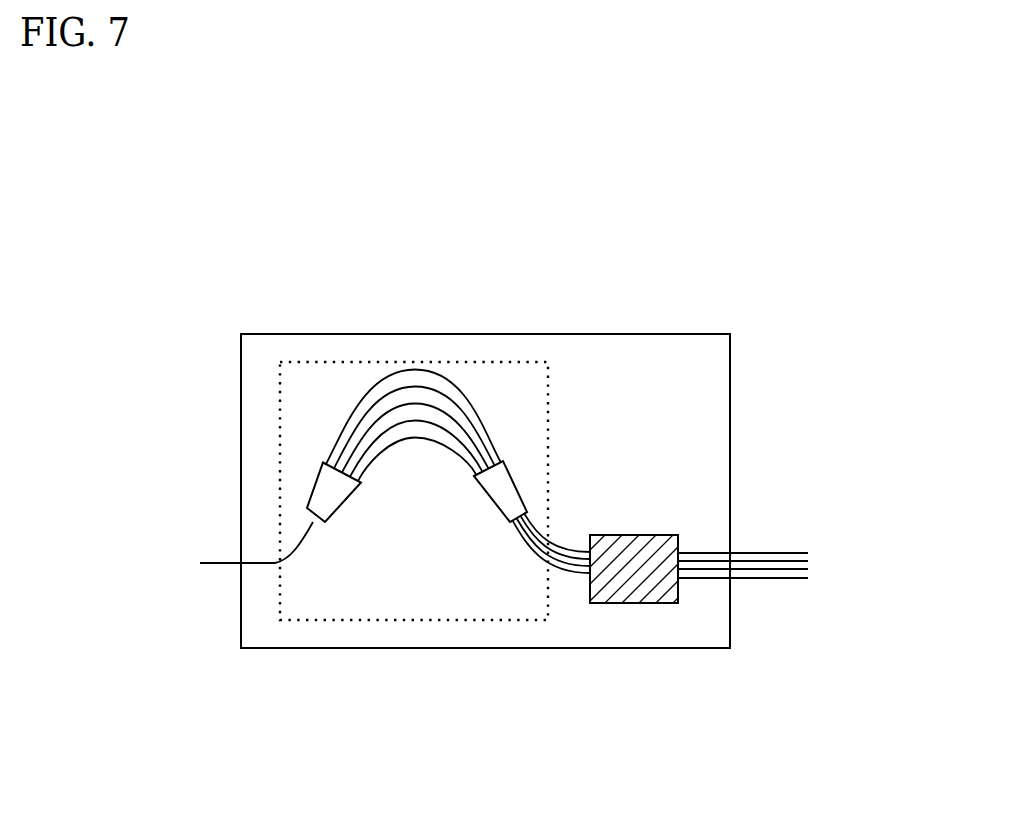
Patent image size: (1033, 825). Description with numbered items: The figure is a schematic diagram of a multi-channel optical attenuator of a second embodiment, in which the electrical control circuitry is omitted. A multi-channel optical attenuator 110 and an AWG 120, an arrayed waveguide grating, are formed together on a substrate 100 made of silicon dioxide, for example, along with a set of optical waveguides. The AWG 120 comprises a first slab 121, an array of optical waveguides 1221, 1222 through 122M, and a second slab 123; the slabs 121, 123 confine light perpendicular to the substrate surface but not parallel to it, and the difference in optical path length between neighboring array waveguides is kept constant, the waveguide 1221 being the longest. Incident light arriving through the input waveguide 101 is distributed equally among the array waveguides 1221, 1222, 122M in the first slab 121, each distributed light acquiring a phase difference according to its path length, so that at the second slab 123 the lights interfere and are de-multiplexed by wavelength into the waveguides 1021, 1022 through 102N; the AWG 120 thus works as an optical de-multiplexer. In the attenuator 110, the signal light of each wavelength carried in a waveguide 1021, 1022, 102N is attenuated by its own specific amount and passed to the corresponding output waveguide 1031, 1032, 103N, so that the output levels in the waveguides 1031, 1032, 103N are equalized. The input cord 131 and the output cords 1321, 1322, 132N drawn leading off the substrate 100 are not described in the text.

The substrate 100 is at (598, 334).
The optical waveguide 101 is at (270, 565).
The multi-channel optical attenuator 110 is at (647, 607).
The AWG (Arrayed Waveguide Grating) 120 is at (422, 622).
The first slab 121 is at (313, 490).
The second slab 123 is at (524, 472).
The optical fiber cord 131 is at (200, 563).
The optical waveguide 1221 is at (400, 367).
The optical waveguide 1222 is at (427, 363).
The optical fiber 122M is at (405, 443).
The optical waveguide 1021 is at (553, 550).
The optical waveguide 1022 is at (568, 556).
The optical waveguide 102N is at (578, 585).
The optical waveguide 1031 is at (690, 550).
The optical waveguide 1032 is at (712, 550).
The optical waveguide 103N is at (697, 585).
The optical fiber cord 1321 is at (780, 550).
The optical fiber cord 1322 is at (803, 555).
The optical fiber cord 132N is at (797, 582).